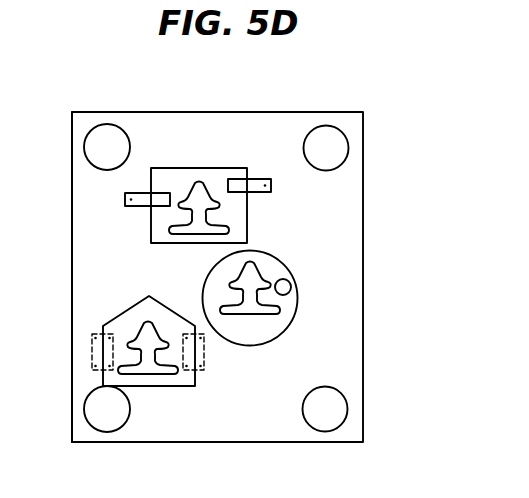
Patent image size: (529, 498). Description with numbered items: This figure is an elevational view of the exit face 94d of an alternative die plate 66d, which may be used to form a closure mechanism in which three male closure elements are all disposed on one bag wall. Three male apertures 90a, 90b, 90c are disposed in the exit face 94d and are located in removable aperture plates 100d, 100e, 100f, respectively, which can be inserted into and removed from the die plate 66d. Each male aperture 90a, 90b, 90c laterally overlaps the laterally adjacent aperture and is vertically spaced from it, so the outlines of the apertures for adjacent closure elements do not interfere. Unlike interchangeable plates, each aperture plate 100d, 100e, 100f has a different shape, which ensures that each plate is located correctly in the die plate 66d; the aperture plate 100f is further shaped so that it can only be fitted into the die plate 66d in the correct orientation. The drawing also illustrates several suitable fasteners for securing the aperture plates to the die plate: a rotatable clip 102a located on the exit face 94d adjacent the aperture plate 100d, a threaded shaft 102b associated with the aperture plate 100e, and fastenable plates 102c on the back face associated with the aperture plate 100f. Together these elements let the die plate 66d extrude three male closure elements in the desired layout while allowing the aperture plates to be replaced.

The die plate 66d is at (131, 111).
The exit face 94d is at (87, 253).
The aperture plate 100d is at (217, 168).
The rotatable clip 102a is at (257, 194).
The male aperture 90a is at (170, 231).
The aperture plate 100e is at (298, 298).
The threaded shaft 102b is at (290, 281).
The male aperture 90b is at (280, 310).
The aperture plate 100f is at (149, 386).
The fastenable plate 102c is at (91, 357).
The male aperture 90c is at (185, 372).